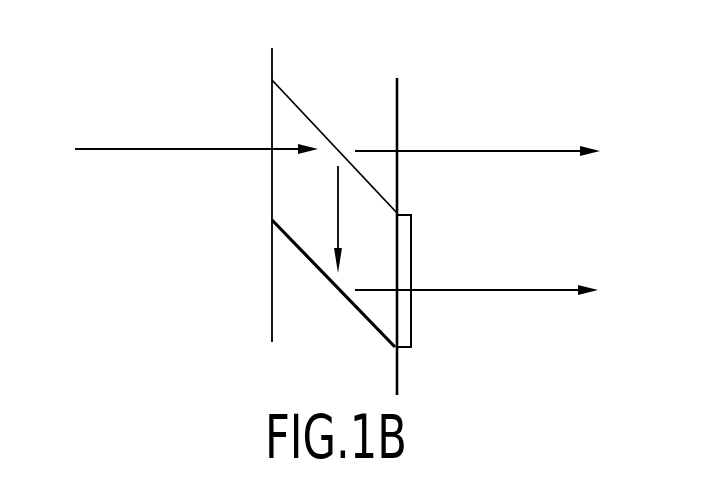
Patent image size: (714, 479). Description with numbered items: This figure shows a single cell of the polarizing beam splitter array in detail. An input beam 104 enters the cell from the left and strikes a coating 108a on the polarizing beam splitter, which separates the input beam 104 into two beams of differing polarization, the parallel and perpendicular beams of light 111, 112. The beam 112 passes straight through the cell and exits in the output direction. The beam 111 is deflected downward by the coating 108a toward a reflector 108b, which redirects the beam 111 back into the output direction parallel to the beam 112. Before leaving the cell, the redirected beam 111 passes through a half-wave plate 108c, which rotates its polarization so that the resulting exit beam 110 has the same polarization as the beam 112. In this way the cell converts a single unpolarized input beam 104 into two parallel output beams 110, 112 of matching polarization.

The input beam 104 is at (196, 135).
The coating 108a is at (302, 103).
The reflector 108b is at (330, 283).
The half-wave plate 108c is at (415, 235).
The exit beam 110 is at (476, 277).
The parallel beam of light 111 is at (337, 212).
The perpendicular beam of light 112 is at (477, 138).